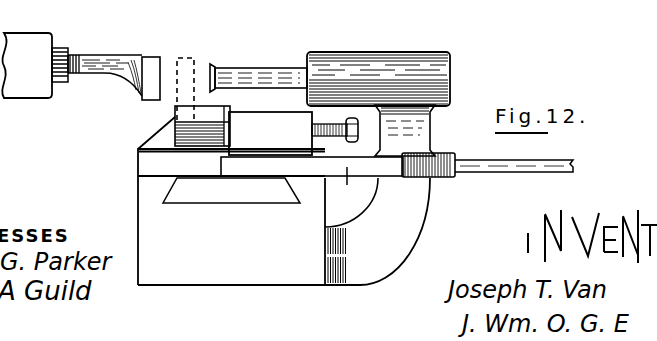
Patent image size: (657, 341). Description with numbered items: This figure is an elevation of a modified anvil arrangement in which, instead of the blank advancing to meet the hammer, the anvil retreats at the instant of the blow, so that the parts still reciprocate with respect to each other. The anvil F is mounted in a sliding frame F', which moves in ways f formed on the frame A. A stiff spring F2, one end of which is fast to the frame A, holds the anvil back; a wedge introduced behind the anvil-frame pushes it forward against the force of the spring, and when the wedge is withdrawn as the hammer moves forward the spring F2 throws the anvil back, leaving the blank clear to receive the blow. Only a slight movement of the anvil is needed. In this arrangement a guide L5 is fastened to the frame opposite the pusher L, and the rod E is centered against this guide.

The pusher L is at (114, 64).
The rod E is at (193, 77).
The guide L5 is at (330, 71).
The anvil F is at (212, 120).
The sliding frame F' is at (270, 133).
The stiff spring F2 is at (371, 192).
The ways f is at (228, 192).
The frame A is at (249, 201).